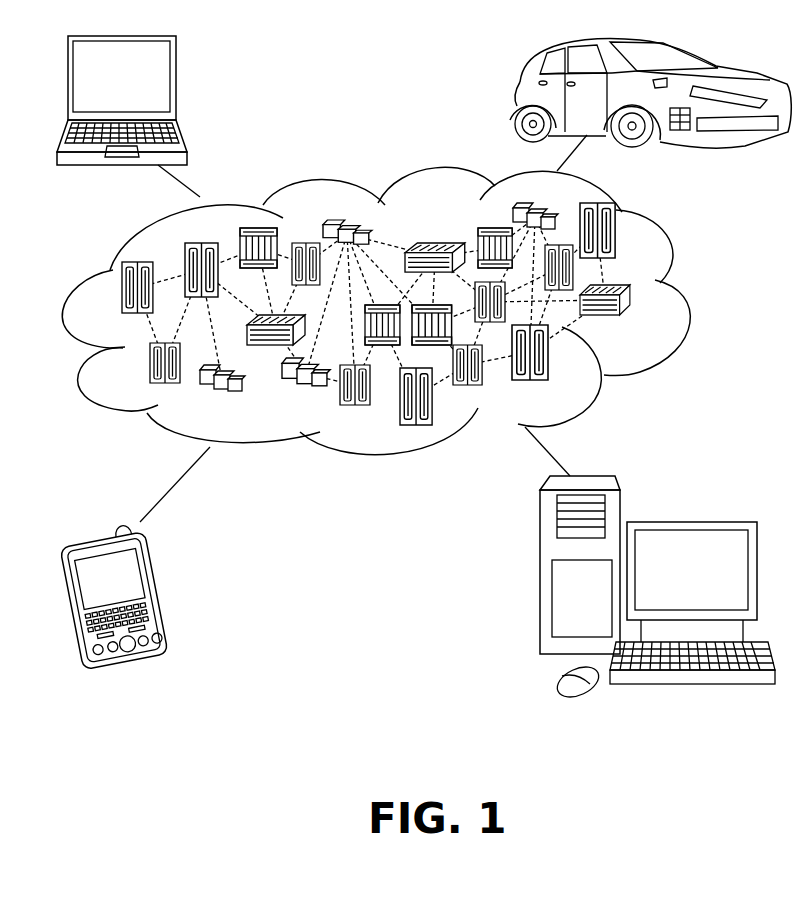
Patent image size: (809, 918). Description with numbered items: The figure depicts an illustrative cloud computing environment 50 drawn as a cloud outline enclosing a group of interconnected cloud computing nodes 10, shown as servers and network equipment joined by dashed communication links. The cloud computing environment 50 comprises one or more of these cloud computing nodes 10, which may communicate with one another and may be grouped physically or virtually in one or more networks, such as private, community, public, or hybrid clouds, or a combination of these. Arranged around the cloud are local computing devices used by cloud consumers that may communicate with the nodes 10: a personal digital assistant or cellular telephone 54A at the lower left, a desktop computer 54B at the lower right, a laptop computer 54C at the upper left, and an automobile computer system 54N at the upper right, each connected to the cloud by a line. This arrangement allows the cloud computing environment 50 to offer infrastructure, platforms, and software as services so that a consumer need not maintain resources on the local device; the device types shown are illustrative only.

The cloud computing node 10 is at (648, 321).
The cloud computing environment 50 is at (693, 291).
The personal digital assistant or cellular telephone 54A is at (168, 593).
The desktop computer 54B is at (690, 521).
The laptop computer 54C is at (178, 82).
The automobile computer system 54N is at (522, 100).